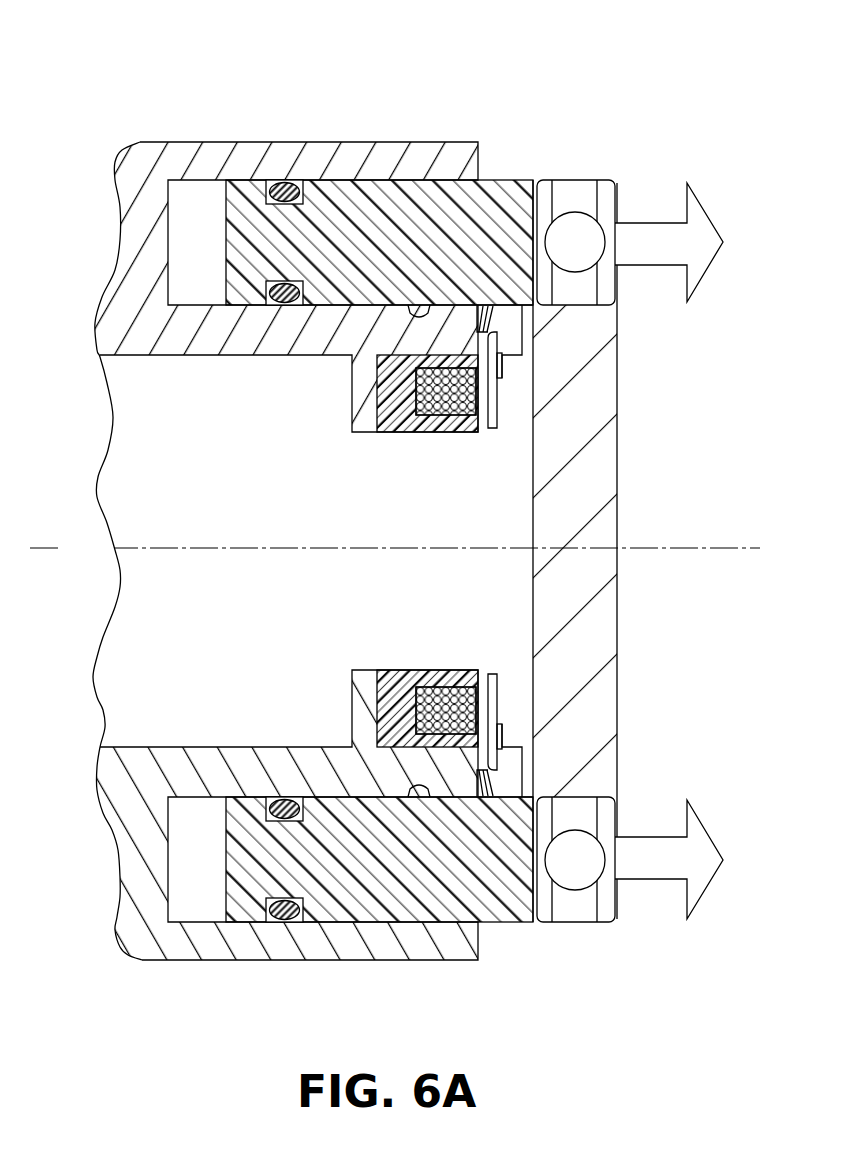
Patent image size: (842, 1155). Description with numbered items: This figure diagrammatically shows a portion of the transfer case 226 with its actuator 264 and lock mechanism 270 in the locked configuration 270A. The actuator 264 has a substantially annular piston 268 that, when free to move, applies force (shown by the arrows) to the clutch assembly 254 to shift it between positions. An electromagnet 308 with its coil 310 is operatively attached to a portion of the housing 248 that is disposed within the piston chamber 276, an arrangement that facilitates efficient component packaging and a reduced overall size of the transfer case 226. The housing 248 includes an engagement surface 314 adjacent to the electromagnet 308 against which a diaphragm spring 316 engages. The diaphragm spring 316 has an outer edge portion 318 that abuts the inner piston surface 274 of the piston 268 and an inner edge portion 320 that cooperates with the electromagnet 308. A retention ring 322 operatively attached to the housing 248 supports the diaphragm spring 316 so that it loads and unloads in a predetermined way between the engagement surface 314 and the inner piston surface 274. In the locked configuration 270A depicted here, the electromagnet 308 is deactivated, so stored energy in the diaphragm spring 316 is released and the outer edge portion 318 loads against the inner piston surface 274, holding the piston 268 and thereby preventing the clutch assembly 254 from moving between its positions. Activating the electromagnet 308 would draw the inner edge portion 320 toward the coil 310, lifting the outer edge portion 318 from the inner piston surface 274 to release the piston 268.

The transfer case 226 is at (104, 100).
The housing 248 is at (229, 158).
The clutch assembly 254 is at (608, 585).
The actuator 264 is at (228, 305).
The piston 268 is at (493, 906).
The lock mechanism 270 is at (626, 556).
The locked configuration 270A is at (626, 556).
The inner piston surface 274 is at (419, 318).
The piston chamber 276 is at (366, 399).
The electromagnet 308 is at (418, 435).
The coil 310 is at (452, 414).
The engagement surface 314 is at (488, 322).
The diaphragm spring 316 is at (492, 710).
The outer edge portion 318 is at (500, 320).
The inner edge portion 320 is at (492, 432).
The retention ring 322 is at (503, 363).